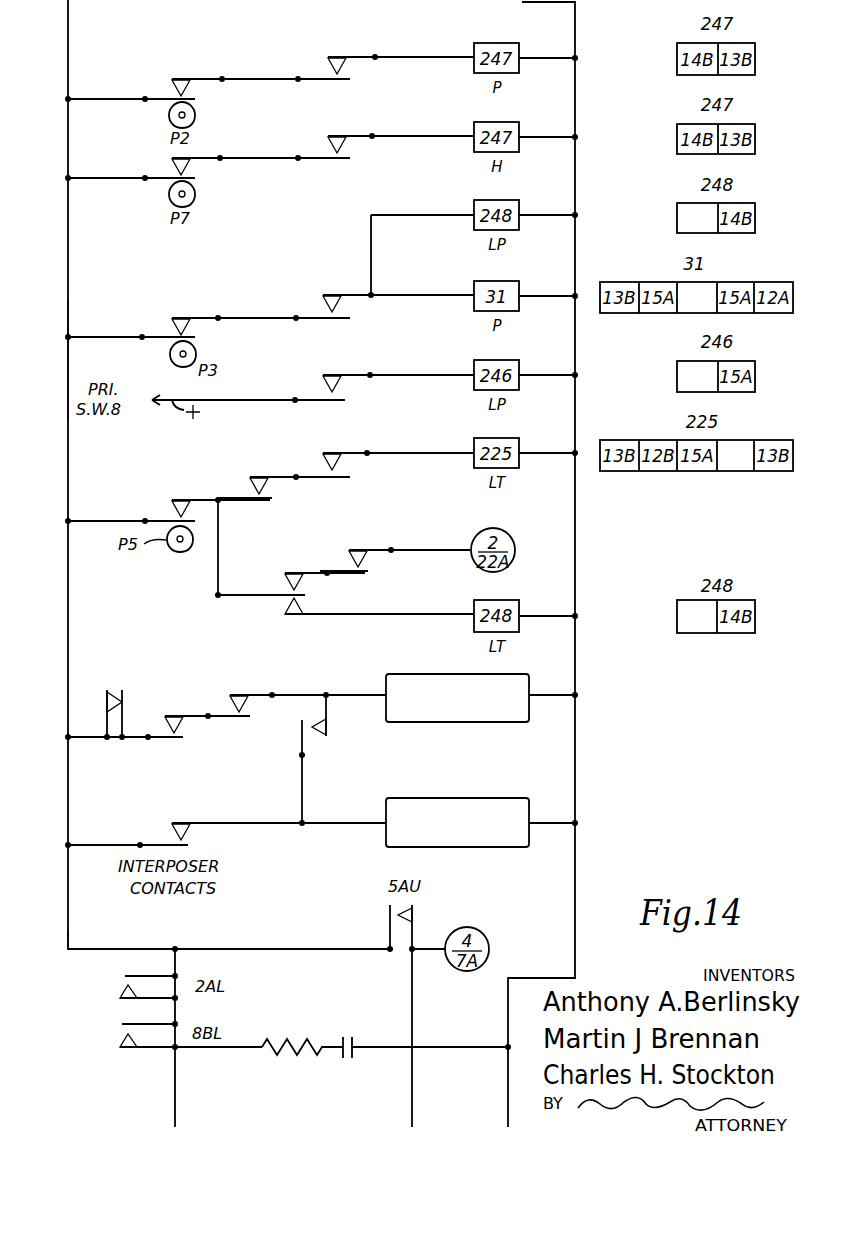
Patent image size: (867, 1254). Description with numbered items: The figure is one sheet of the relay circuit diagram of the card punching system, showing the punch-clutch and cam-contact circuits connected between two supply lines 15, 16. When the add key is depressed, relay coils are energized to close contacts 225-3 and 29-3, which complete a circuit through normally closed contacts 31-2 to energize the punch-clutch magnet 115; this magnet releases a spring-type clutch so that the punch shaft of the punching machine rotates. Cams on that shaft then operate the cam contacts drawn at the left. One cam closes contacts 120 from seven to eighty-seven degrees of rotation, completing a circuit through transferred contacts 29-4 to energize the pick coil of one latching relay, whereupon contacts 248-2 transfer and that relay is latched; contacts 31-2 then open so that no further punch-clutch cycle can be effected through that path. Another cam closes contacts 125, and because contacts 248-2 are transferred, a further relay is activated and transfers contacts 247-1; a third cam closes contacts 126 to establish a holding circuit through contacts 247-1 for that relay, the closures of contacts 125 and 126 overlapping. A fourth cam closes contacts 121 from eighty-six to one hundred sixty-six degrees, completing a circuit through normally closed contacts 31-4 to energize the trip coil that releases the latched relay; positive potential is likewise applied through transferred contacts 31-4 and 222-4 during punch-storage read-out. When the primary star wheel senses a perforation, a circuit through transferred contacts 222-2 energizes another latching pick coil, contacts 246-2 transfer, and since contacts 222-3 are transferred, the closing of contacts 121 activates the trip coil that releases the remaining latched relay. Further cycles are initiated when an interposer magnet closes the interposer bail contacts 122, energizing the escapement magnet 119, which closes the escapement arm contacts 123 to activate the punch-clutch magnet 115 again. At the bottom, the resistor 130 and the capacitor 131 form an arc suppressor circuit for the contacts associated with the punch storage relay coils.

The line 15 is at (48, 360).
The line 16 is at (71, 946).
The contacts 125 is at (193, 95).
The contacts 126 is at (193, 174).
The contacts 120 is at (193, 333).
The contacts 121 is at (172, 506).
The interposer bail contacts 122 is at (172, 833).
The escapement arm contacts 123 is at (309, 732).
The punch-clutch magnet 115 is at (492, 722).
The escapement magnet 119 is at (468, 847).
The resistor 130 is at (292, 1038).
The capacitor 131 is at (348, 1060).
The contacts 248-2 is at (348, 73).
The contacts 247-1 is at (348, 152).
The contacts 29-4 is at (343, 311).
The contacts 222-2 is at (343, 391).
The contacts 222-3 is at (343, 469).
The contacts 246-2 is at (250, 492).
The contacts 222-4 is at (368, 566).
The contacts 31-4 is at (303, 590).
The contacts 31-2 is at (108, 699).
The contacts 29-3 is at (248, 710).
The contacts 225-3 is at (183, 731).